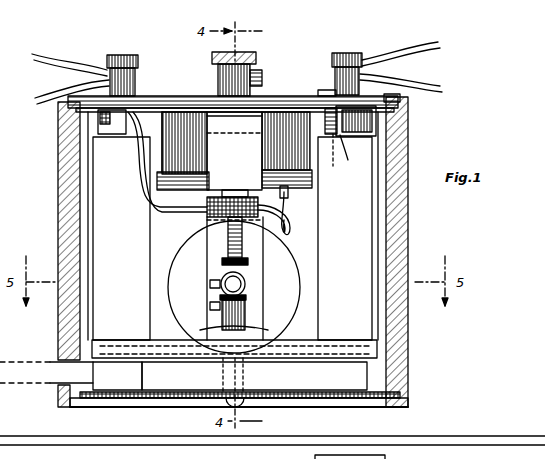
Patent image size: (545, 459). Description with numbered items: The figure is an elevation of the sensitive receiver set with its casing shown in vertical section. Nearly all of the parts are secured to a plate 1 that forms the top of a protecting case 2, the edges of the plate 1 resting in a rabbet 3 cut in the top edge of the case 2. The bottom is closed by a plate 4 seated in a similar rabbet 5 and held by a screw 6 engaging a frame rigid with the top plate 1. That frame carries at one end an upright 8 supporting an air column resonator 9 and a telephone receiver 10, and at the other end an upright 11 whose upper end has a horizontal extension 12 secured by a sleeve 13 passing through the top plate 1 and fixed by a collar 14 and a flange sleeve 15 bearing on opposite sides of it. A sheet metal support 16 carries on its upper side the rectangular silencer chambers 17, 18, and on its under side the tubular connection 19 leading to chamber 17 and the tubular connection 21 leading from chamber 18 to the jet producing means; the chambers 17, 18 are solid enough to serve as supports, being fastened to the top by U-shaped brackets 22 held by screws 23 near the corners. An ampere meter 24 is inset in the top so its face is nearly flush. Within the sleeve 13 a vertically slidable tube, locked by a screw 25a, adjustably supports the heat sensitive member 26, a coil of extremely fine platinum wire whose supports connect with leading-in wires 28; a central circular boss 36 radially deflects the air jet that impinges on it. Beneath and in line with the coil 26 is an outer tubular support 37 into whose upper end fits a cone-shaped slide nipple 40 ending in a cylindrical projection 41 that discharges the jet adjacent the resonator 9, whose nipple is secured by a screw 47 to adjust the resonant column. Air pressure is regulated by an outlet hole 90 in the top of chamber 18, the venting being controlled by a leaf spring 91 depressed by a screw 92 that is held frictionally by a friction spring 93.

The plate 1 is at (143, 100).
The protecting case 2 is at (400, 247).
The rabbet 3 is at (400, 99).
The bottom plate 4 is at (355, 399).
The rabbet 5 is at (398, 400).
The screw 6 is at (215, 377).
The upright 8 is at (250, 256).
The air column resonator 9 is at (247, 283).
The telephone receiver 10 is at (196, 240).
The upright 11 is at (248, 148).
The horizontal extension 12 is at (262, 128).
The sleeve 13 is at (243, 116).
The collar 14 is at (215, 112).
The flange sleeve 15 is at (217, 82).
The sheet metal support 16 is at (378, 348).
The silencer chamber 17 is at (121, 238).
The silencer chamber 18 is at (345, 238).
The tubular connection 19 is at (71, 376).
The tubular connection 21 is at (292, 396).
The U-shaped bracket 22 is at (108, 128).
The screw 23 is at (100, 118).
The ampere meter 24 is at (175, 142).
The screw 25a is at (262, 80).
The heat sensitive member 26 is at (226, 250).
The leading-in wire 28 is at (140, 178).
The central circular boss 36 is at (213, 211).
The outer tubular support 37 is at (247, 309).
The slide nipple 40 is at (247, 296).
The cylindrical projection 41 is at (210, 306).
The screw 47 is at (210, 284).
The outlet hole 90 is at (340, 151).
The leaf spring 91 is at (340, 140).
The screw 92 is at (362, 128).
The friction spring 93 is at (325, 100).